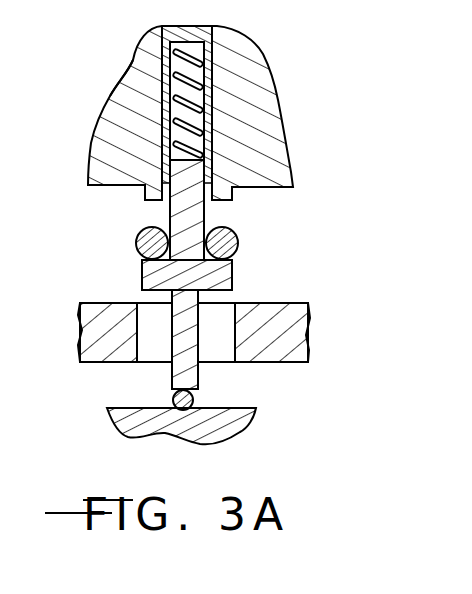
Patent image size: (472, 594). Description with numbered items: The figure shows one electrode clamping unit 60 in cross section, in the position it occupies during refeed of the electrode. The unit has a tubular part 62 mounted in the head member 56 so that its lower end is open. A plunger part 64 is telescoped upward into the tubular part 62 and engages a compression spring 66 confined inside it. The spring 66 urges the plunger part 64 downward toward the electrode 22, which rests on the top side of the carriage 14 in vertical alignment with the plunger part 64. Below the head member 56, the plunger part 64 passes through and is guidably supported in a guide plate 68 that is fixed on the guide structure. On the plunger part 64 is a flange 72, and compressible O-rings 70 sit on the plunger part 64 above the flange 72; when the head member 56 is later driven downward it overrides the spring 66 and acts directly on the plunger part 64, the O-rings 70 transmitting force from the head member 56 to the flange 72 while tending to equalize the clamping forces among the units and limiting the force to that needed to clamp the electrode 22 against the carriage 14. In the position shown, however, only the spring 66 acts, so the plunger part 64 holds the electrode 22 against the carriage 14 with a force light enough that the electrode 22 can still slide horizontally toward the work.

The carriage 14 is at (240, 425).
The electrode 22 is at (194, 401).
The head member 56 is at (266, 172).
The electrode clamping unit 60 is at (230, 84).
The tubular part 62 is at (133, 66).
The plunger part 64 is at (193, 221).
The compression spring 66 is at (212, 126).
The guide plate 68 is at (288, 332).
The O-ring 70 is at (136, 243).
The flange 72 is at (220, 280).